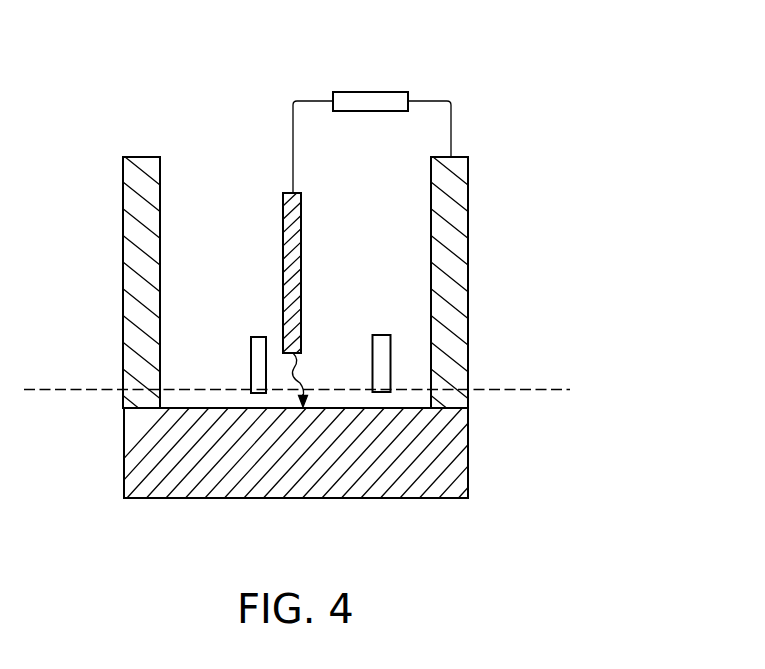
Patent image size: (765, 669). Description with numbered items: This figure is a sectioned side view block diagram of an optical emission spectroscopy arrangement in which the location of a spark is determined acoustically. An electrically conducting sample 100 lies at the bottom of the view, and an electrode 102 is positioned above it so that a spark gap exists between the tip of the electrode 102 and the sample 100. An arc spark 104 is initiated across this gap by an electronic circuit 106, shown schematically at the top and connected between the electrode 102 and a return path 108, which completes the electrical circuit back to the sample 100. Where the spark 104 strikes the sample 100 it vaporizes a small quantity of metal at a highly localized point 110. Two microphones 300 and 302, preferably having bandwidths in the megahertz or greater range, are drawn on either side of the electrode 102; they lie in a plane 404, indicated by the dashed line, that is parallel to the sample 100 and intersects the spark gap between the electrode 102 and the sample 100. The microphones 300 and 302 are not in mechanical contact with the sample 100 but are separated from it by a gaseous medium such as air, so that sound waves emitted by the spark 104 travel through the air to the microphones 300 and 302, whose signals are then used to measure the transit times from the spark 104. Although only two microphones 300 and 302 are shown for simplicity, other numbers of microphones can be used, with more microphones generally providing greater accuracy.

The electrically conducting sample 100 is at (278, 500).
The electrode 102 is at (283, 267).
The arc spark 104 is at (302, 376).
The electronic circuit 106 is at (368, 92).
The return path 108 is at (470, 285).
The localized point 110 is at (304, 408).
The microphone 300 is at (375, 335).
The microphone 302 is at (250, 361).
The plane 404 is at (516, 389).